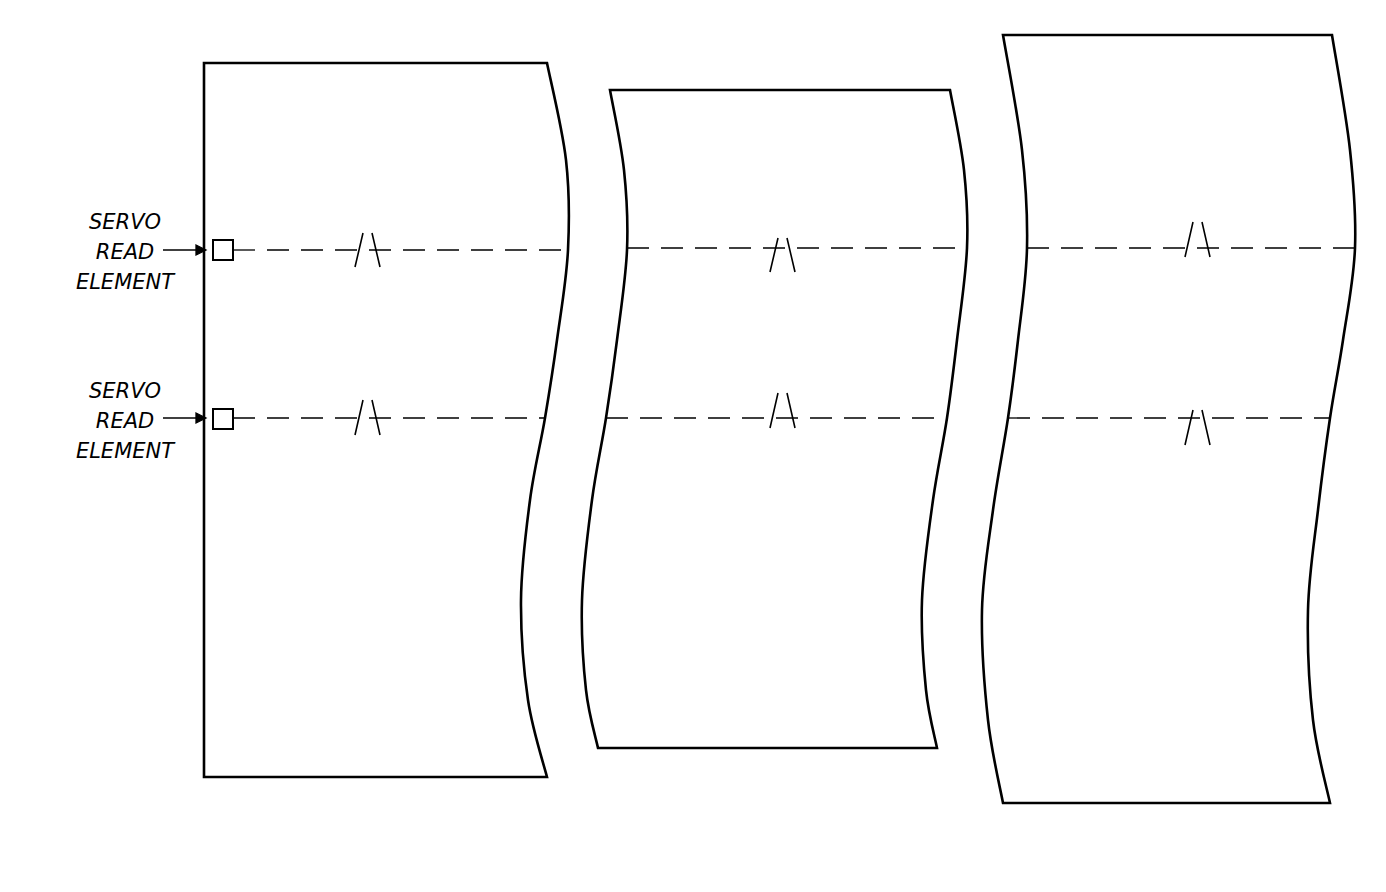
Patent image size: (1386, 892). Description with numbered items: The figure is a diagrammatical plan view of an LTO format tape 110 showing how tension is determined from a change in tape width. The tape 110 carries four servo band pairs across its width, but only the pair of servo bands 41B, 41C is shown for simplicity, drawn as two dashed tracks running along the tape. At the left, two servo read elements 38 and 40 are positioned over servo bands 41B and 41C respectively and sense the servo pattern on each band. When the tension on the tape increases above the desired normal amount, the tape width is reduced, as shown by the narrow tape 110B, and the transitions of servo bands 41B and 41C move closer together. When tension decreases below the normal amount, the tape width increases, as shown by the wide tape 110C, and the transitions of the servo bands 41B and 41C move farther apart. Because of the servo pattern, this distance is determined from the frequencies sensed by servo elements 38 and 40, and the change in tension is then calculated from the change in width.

The servo element 38 is at (224, 240).
The servo element 40 is at (222, 429).
The servo band 41B is at (453, 247).
The servo band 41C is at (462, 424).
The LTO format tape 110 is at (204, 628).
The narrow tape 110B is at (793, 88).
The wide tape 110C is at (1312, 591).